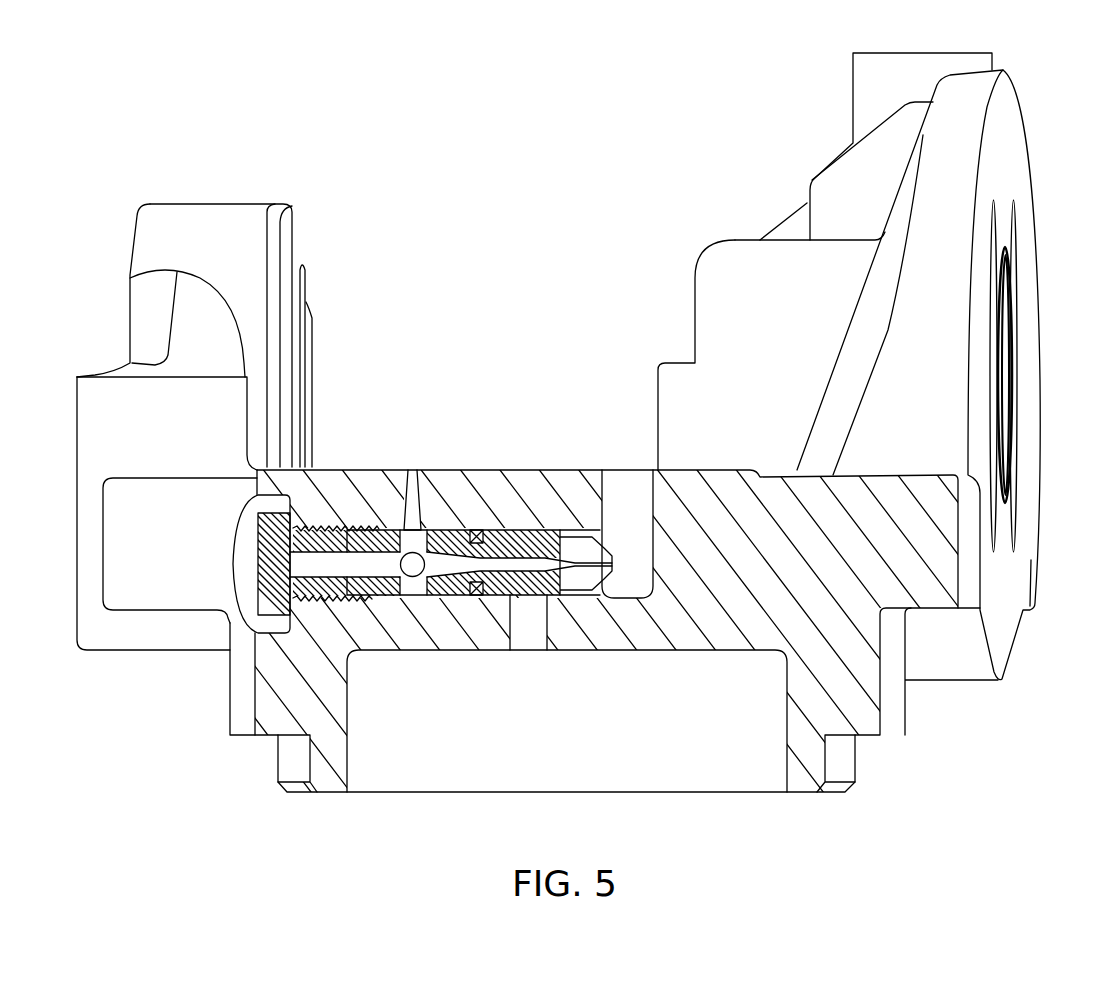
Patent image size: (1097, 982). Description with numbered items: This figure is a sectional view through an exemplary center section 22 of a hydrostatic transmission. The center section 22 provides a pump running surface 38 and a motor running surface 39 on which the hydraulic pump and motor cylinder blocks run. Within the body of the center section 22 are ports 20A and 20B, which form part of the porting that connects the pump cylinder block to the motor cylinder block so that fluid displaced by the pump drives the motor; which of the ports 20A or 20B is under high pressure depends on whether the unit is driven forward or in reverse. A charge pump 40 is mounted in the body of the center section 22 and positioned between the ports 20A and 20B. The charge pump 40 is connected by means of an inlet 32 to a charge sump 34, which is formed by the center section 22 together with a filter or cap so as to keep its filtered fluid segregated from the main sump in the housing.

The port 20A is at (404, 492).
The port 20B is at (628, 498).
The center section 22 is at (778, 365).
The inlet 32 is at (528, 633).
The charge sump 34 is at (467, 735).
The pump running surface 38 is at (472, 470).
The motor running surface 39 is at (1003, 177).
The charge pump 40 is at (238, 547).